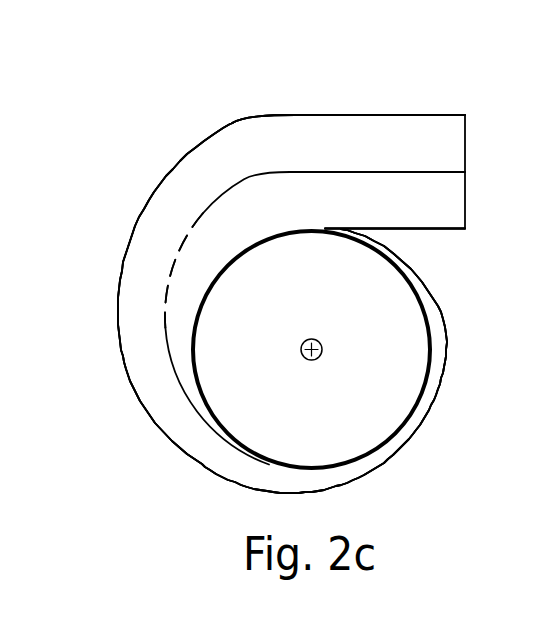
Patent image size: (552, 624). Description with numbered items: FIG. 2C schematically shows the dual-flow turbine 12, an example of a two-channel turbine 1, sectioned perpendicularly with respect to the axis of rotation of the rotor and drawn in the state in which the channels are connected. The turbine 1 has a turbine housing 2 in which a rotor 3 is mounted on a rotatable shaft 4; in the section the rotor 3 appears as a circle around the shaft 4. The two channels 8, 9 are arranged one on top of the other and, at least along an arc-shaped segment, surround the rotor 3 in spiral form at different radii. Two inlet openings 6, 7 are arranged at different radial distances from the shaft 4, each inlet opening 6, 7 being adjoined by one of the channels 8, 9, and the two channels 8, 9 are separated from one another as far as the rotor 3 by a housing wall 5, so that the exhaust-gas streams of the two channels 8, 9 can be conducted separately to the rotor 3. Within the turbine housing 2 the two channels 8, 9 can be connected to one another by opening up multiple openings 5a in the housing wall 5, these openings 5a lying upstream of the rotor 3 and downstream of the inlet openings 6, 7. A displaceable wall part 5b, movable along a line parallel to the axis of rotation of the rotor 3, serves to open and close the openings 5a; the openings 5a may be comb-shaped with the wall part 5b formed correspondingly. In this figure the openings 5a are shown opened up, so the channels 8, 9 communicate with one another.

The turbine 1 is at (264, 263).
The dual-flow turbine 12 is at (156, 104).
The turbine housing 2 is at (460, 75).
The rotor 3 is at (369, 321).
The shaft 4 is at (321, 362).
The housing wall 5 is at (245, 187).
The openings 5a is at (195, 222).
The displaceable wall part 5b is at (175, 260).
The inlet opening 6 is at (466, 200).
The inlet opening 7 is at (466, 143).
The channel 8 is at (429, 217).
The channel 9 is at (393, 132).